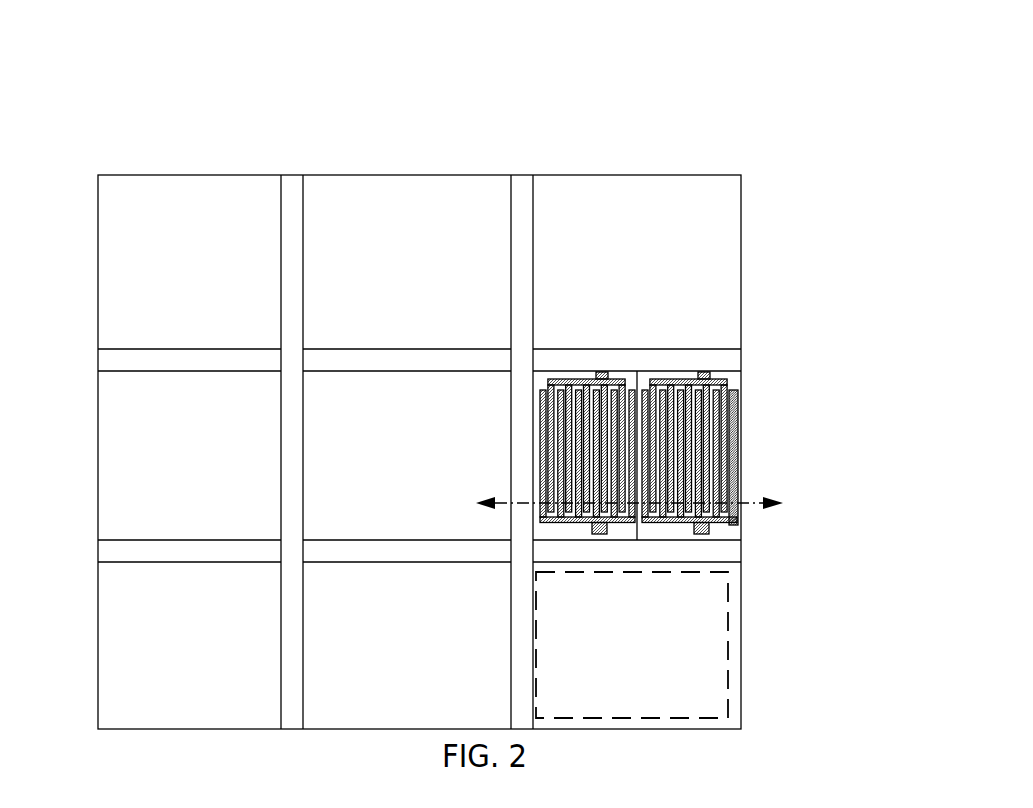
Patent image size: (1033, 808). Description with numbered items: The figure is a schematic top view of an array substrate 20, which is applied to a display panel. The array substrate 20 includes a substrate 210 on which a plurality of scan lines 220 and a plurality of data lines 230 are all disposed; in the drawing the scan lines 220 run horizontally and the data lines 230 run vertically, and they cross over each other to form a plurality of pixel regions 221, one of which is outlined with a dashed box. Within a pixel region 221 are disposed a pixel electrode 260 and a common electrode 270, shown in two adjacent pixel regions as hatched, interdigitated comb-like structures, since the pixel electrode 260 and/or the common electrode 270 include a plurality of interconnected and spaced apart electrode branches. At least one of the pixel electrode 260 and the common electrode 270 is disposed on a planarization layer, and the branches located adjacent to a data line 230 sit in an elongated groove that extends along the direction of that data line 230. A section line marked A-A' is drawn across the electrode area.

The array substrate 20 is at (113, 116).
The substrate 210 is at (703, 250).
The scan lines 220 is at (692, 358).
The data lines 230 is at (520, 212).
The pixel region 221 is at (728, 632).
The common electrode 270 is at (723, 417).
The pixel electrode 260 is at (730, 480).